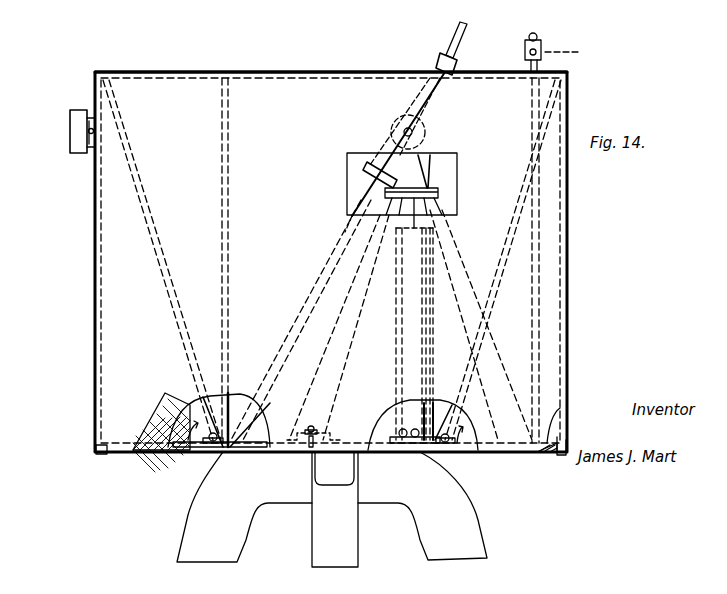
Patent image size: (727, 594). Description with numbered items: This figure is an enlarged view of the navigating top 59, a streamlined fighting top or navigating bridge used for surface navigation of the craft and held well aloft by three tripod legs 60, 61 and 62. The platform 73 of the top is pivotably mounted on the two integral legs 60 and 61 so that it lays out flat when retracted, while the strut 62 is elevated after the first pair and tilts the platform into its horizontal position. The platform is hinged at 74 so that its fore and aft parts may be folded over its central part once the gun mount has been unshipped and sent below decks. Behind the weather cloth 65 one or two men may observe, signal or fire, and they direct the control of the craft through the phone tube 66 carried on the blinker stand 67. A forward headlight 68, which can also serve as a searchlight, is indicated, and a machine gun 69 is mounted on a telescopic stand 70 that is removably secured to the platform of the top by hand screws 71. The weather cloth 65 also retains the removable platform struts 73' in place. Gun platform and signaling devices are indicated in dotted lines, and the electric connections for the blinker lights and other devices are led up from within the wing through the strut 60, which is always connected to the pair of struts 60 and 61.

The top 59 is at (522, 292).
The tripod leg 60 is at (190, 539).
The tripod leg 61 is at (482, 551).
The tripod leg 62 is at (332, 482).
The weather cloth 65 is at (293, 86).
The phone tube 66 is at (577, 53).
The blinker stand 67 is at (541, 43).
The forward headlight 68 is at (75, 131).
The machine gun 69 is at (440, 60).
The telescopic stand 70 is at (438, 269).
The hand screws 71 is at (327, 432).
The platform 73 is at (346, 439).
The removable platform struts 73' is at (334, 260).
The hinge 74 is at (212, 448).